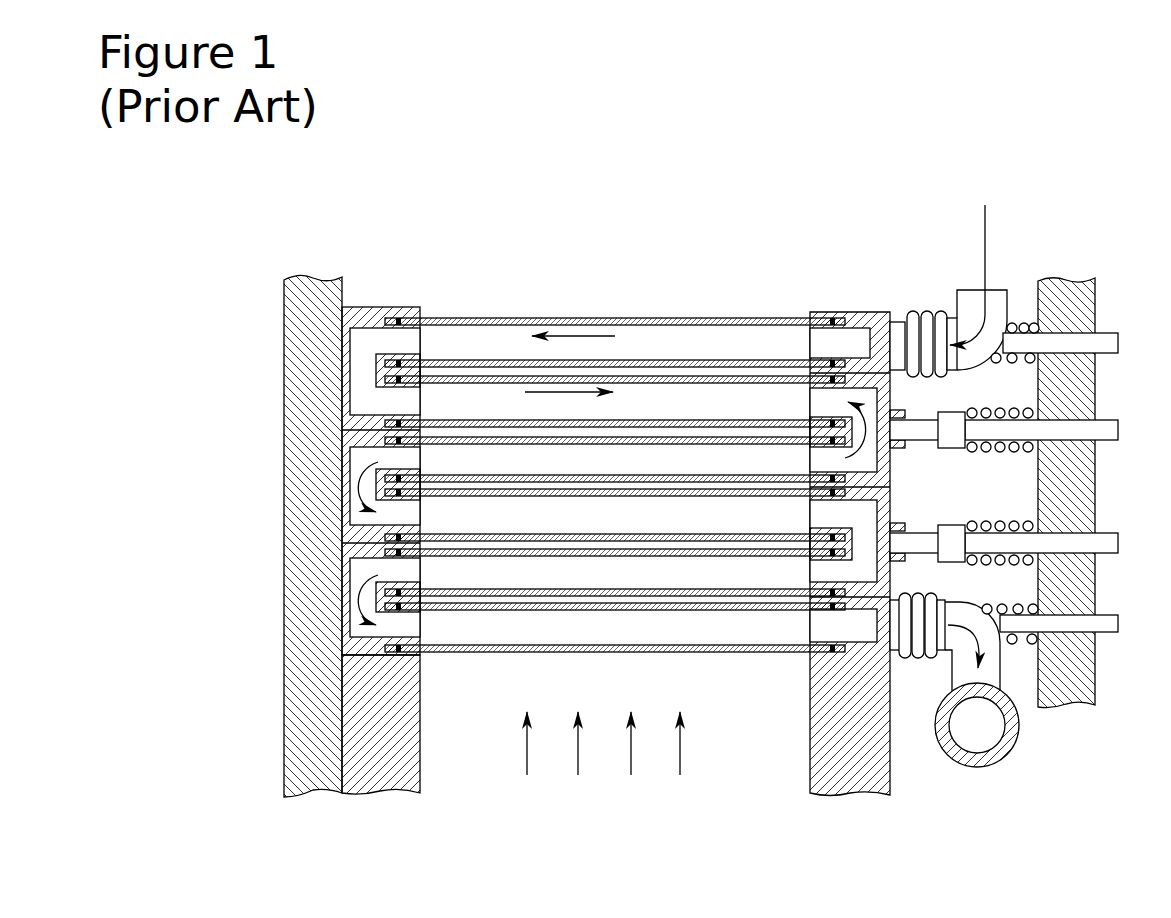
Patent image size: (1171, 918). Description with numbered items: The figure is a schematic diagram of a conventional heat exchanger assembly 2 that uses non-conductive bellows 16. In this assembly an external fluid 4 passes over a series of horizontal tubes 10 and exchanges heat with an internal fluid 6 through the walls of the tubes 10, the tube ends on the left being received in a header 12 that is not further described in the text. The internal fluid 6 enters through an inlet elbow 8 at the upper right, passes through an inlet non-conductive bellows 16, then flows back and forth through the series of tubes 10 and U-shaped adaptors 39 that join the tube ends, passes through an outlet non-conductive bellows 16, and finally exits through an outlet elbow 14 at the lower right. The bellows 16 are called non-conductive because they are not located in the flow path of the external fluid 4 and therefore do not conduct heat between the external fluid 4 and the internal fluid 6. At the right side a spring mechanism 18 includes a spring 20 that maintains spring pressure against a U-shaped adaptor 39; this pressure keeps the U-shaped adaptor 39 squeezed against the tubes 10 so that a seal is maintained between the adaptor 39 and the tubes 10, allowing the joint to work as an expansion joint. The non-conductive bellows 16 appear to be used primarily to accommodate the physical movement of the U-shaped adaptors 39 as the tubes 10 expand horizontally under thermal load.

The heat exchanger assembly 2 is at (326, 256).
The external fluid 4 is at (527, 775).
The internal fluid 6 is at (986, 215).
The inlet elbow 8 is at (1010, 290).
The tubes 10 is at (705, 318).
The header 12 is at (405, 305).
The outlet elbow 14 is at (1003, 757).
The non-conductive bellows 16 is at (922, 312).
The spring mechanism 18 is at (968, 404).
The spring 20 is at (997, 453).
The U-shaped adaptor 39 is at (890, 401).